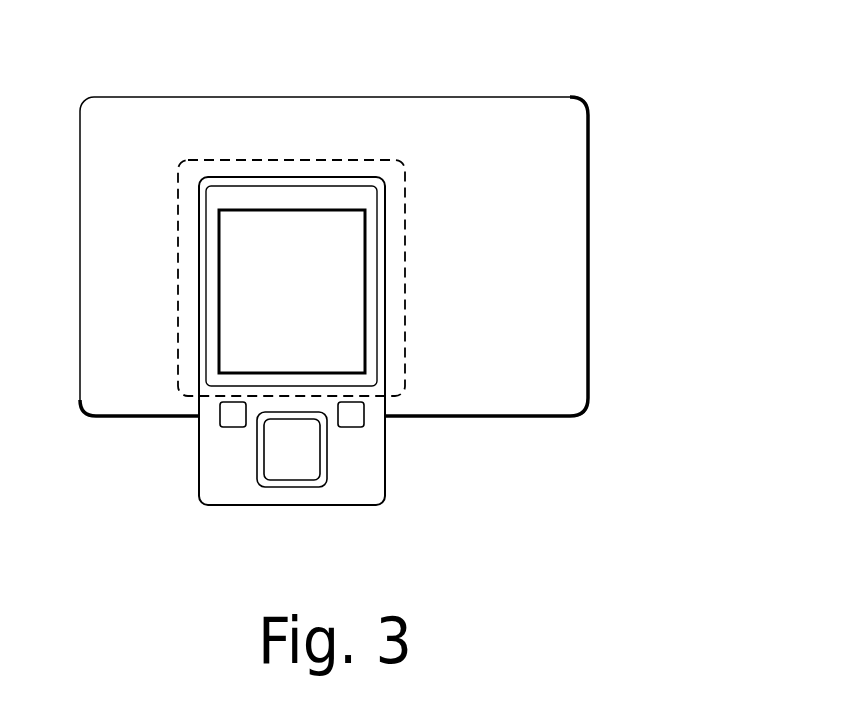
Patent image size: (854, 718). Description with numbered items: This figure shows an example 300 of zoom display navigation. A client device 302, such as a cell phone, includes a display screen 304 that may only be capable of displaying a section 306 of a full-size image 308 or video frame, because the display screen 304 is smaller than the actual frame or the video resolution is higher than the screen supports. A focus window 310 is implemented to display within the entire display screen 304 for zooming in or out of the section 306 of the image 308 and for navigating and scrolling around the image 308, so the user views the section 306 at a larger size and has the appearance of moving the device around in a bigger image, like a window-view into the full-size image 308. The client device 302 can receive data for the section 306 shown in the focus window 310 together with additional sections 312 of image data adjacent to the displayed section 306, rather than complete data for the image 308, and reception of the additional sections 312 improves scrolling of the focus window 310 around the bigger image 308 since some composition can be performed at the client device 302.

The example of zoom display navigation 300 is at (625, 54).
The client device 302 is at (198, 450).
The display screen 304 is at (243, 188).
The section 306 is at (233, 307).
The image 308 is at (335, 144).
The focus window 310 is at (313, 316).
The additional sections 312 is at (407, 255).